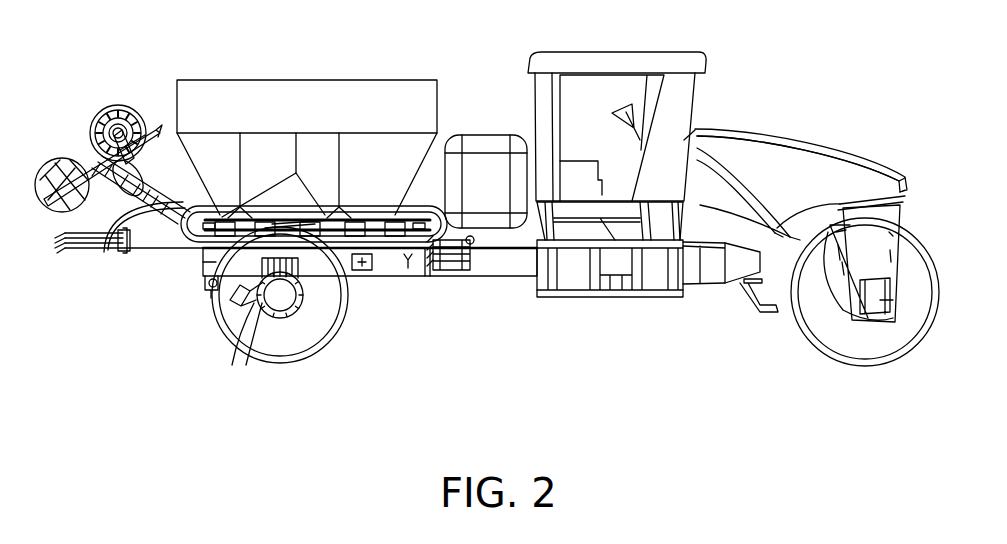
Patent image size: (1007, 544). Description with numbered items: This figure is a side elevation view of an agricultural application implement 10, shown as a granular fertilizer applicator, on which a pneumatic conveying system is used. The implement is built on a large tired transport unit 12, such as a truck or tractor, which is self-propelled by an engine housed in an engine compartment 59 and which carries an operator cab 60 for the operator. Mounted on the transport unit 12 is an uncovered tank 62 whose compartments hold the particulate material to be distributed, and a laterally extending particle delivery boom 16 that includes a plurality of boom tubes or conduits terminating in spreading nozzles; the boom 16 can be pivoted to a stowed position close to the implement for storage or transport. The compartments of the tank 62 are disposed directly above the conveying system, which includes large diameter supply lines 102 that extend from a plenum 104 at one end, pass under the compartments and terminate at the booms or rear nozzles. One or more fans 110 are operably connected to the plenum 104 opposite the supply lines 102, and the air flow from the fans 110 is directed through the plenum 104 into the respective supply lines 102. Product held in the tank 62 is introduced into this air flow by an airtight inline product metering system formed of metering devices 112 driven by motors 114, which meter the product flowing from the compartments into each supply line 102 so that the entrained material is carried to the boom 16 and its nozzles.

The agricultural application implement 10 is at (575, 335).
The transport unit 12 is at (720, 126).
The particle delivery boom 16 is at (471, 283).
The engine compartment 59 is at (825, 148).
The operator cab 60 is at (618, 53).
The tank 62 is at (285, 61).
The supply line 102 is at (155, 246).
The plenum 104 is at (113, 235).
The fan 110 is at (98, 148).
The metering device 112 is at (265, 242).
The motor 114 is at (213, 282).